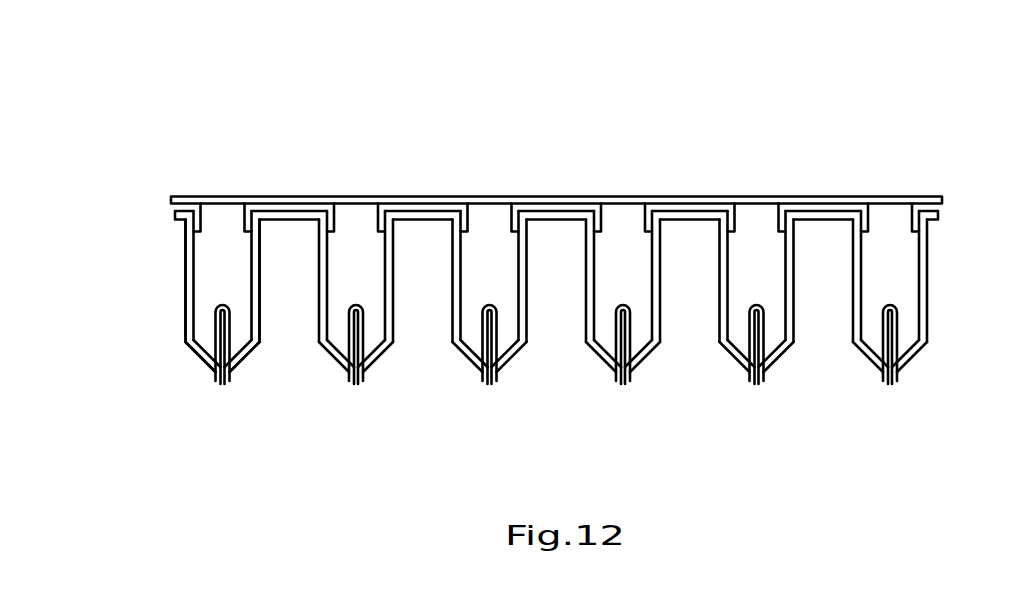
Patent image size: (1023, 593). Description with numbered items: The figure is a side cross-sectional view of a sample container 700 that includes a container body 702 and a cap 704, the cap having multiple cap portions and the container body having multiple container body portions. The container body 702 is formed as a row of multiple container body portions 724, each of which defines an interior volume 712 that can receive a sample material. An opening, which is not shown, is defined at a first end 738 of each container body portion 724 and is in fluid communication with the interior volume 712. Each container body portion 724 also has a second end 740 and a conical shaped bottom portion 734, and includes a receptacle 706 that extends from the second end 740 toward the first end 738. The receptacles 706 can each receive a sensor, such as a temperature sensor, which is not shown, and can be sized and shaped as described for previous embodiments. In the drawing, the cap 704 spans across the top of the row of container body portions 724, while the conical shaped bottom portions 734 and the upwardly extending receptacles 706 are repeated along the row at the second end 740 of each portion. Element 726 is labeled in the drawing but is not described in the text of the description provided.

The sample container 700 is at (737, 97).
The container body 702 is at (185, 308).
The cap 704 is at (178, 193).
The receptacle 706 is at (216, 377).
The interior volume 712 is at (200, 274).
The container body portion 724 is at (262, 343).
The tab 726 is at (223, 196).
The conical shaped bottom portion 734 is at (203, 360).
The first end 738 is at (181, 222).
The second end 740 is at (214, 386).